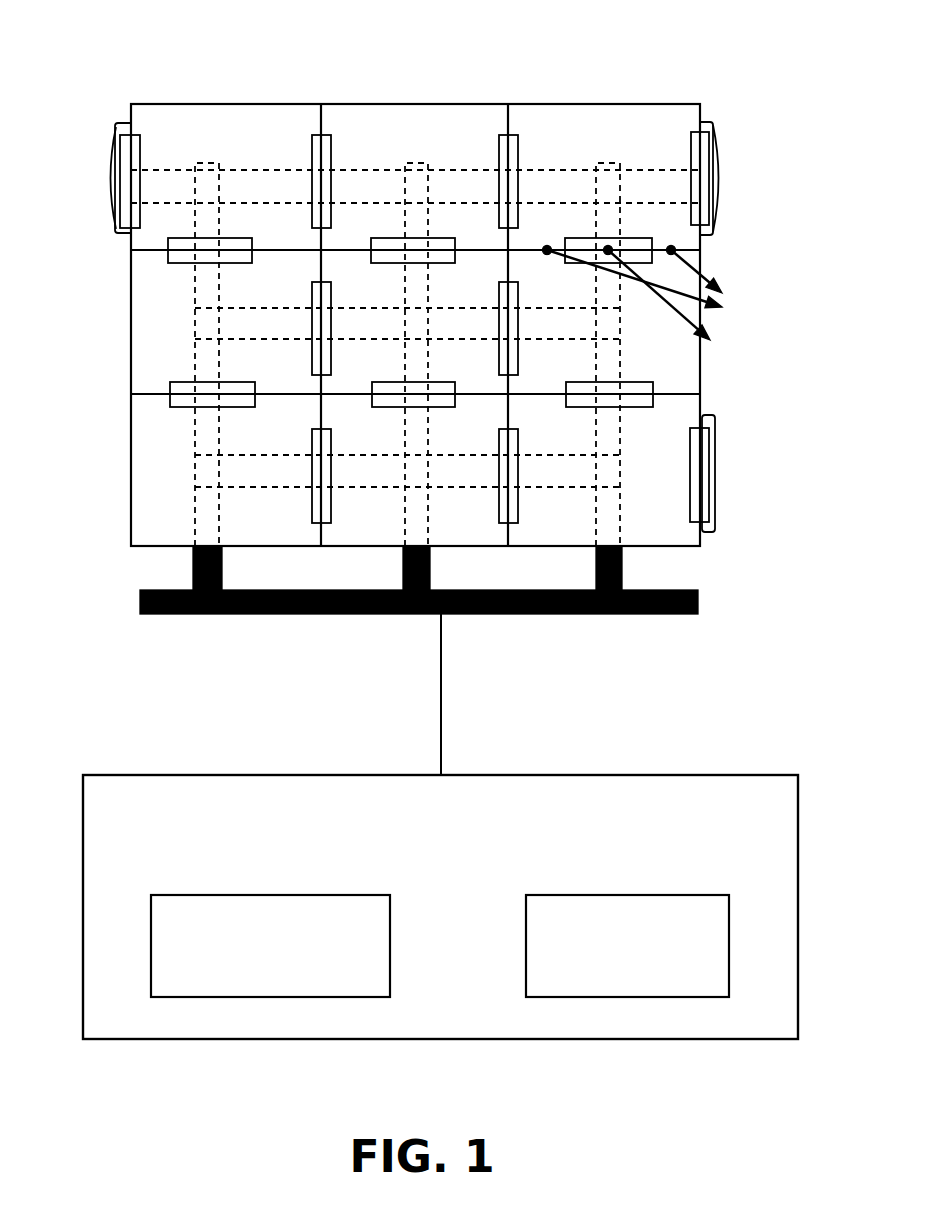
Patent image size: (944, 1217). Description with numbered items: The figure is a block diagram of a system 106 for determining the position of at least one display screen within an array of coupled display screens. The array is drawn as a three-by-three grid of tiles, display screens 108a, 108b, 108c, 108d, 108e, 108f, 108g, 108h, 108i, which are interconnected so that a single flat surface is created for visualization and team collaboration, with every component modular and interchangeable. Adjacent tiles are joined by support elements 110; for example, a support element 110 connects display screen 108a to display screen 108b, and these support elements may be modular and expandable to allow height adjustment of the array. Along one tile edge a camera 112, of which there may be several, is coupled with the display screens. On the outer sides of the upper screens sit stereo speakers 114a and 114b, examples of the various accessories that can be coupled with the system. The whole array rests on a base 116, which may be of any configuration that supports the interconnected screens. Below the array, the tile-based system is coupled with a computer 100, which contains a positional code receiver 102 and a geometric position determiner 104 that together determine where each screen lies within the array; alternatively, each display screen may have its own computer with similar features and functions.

The computer 100 is at (423, 853).
The positional code receiver 102 is at (253, 978).
The geometric position determiner 104 is at (610, 990).
The system 106 is at (210, 38).
The display screen 108a is at (236, 150).
The display screen 108b is at (397, 141).
The display screen 108c is at (627, 141).
The display screen 108d is at (243, 293).
The display screen 108e is at (342, 293).
The display screen 108f is at (537, 297).
The display screen 108g is at (238, 446).
The display screen 108h is at (342, 446).
The display screen 108i is at (577, 441).
The support element 110 is at (363, 165).
The camera 112 is at (651, 305).
The stereo speaker 114a is at (112, 208).
The stereo speaker 114b is at (718, 180).
The base 116 is at (698, 607).